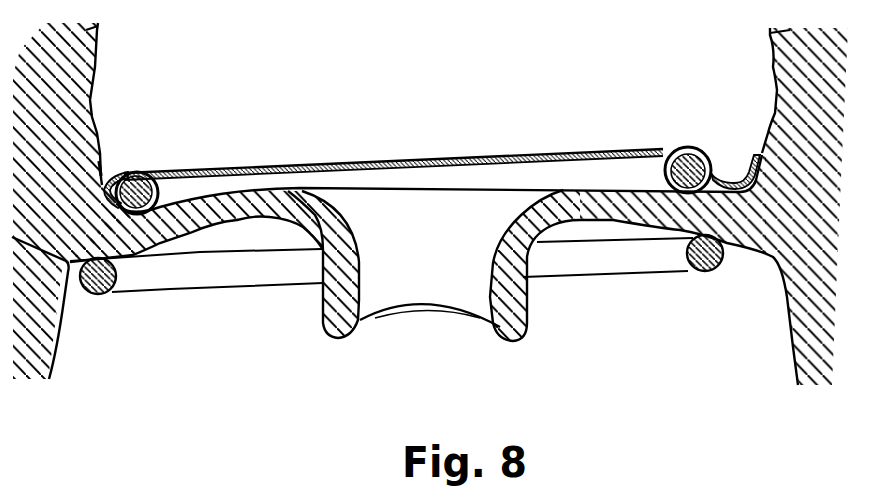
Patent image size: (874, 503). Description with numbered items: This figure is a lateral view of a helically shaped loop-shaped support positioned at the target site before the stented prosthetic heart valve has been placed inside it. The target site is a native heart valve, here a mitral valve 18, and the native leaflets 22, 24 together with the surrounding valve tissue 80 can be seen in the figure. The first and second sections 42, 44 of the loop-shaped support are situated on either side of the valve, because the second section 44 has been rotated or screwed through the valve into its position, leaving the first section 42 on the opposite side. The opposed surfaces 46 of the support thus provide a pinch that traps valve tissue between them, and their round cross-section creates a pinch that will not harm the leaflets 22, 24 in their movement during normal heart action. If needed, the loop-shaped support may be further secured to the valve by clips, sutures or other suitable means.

The mitral valve 18 is at (279, 206).
The native leaflet 22 is at (317, 317).
The native leaflet 24 is at (530, 312).
The first section 42 is at (193, 170).
The second section 44 is at (157, 278).
The opposed surfaces 46 is at (688, 195).
The surrounding valve tissue 80 is at (800, 122).